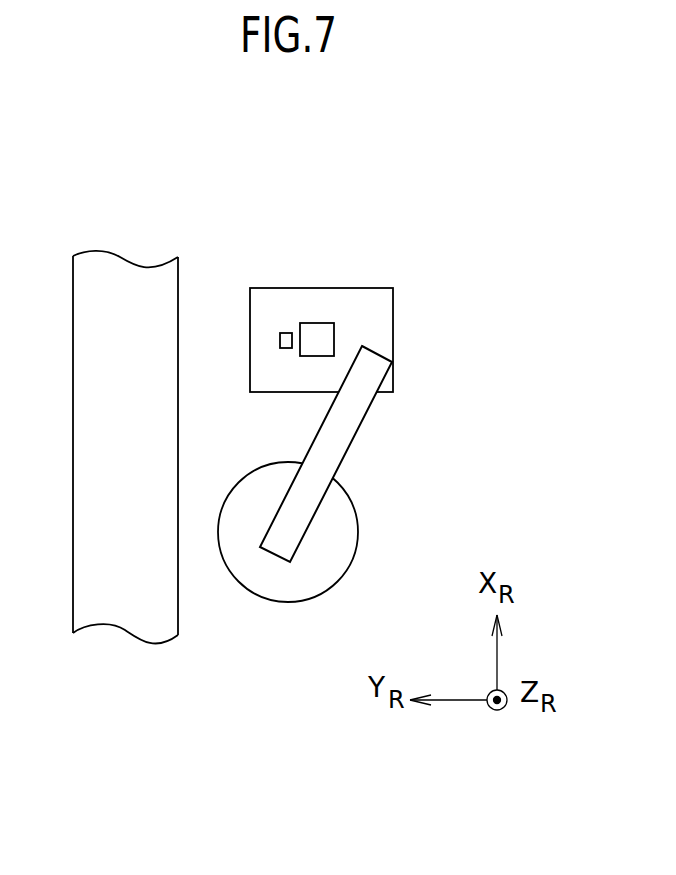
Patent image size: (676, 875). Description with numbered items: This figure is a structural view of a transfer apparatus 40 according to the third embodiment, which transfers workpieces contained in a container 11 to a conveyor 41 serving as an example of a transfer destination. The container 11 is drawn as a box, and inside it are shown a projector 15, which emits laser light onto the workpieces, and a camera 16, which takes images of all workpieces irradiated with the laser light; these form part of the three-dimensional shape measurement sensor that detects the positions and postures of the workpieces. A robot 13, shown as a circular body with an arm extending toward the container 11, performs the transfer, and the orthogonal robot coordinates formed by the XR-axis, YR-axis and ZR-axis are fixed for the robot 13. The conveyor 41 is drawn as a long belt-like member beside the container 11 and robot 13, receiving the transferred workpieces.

The transfer apparatus 40 is at (418, 222).
The conveyor 41 is at (123, 620).
The container 11 is at (393, 303).
The robot 13 is at (343, 520).
The projector 15 is at (287, 333).
The camera 16 is at (322, 323).